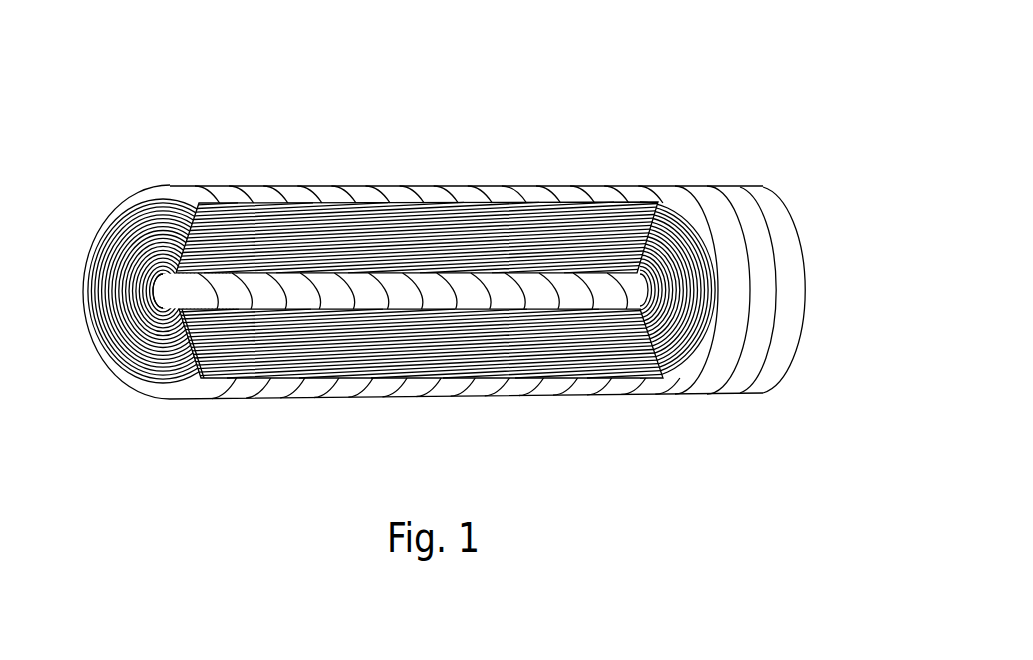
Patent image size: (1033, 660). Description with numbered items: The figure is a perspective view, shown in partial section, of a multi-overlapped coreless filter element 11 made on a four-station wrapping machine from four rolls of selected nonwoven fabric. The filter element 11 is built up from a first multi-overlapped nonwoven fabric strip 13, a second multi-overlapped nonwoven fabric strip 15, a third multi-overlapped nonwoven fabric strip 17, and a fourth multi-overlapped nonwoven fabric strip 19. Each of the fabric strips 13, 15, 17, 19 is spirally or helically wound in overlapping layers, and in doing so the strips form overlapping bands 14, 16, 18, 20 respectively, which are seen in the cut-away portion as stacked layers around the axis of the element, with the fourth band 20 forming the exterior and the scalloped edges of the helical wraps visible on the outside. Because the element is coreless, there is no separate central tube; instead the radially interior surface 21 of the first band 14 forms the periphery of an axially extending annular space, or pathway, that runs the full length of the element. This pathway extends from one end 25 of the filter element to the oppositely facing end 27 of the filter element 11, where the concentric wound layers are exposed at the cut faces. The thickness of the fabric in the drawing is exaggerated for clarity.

The multi-overlapped coreless filter element 11 is at (677, 90).
The first multi-overlapped nonwoven fabric strip 13 is at (543, 262).
The first overlapping band 14 is at (172, 321).
The second multi-overlapped nonwoven fabric strip 15 is at (473, 245).
The second overlapping band 16 is at (183, 333).
The third multi-overlapped nonwoven fabric strip 17 is at (412, 228).
The third overlapping band 18 is at (197, 345).
The fourth multi-overlapped nonwoven fabric strip 19 is at (313, 203).
The fourth overlapping band 20 is at (202, 366).
The radially interior surface 21 is at (372, 277).
The end of the filter element 25 is at (95, 242).
The oppositely facing end of the filter element 27 is at (807, 337).